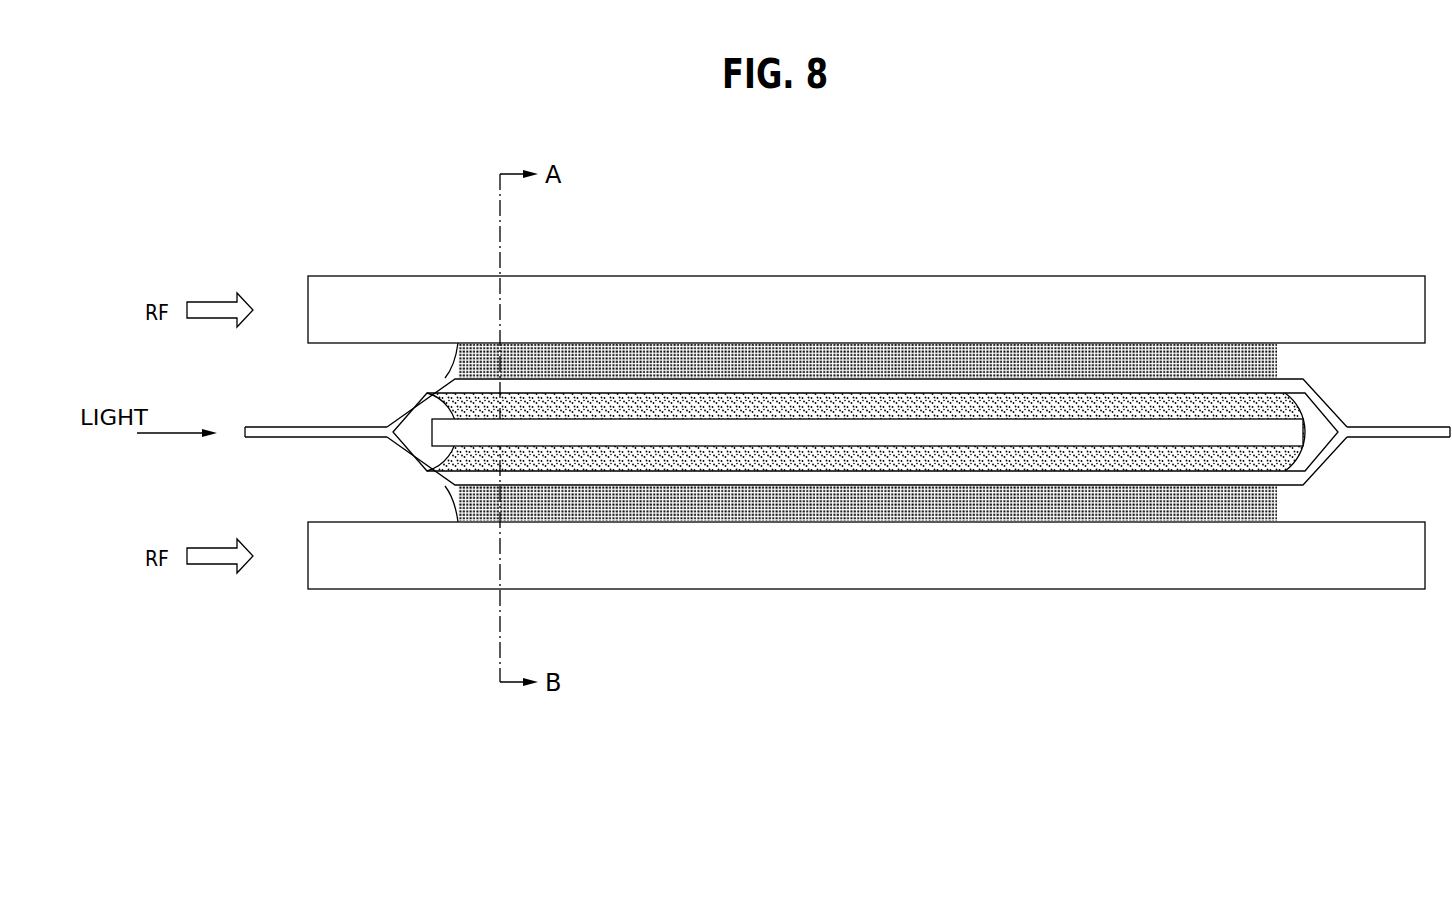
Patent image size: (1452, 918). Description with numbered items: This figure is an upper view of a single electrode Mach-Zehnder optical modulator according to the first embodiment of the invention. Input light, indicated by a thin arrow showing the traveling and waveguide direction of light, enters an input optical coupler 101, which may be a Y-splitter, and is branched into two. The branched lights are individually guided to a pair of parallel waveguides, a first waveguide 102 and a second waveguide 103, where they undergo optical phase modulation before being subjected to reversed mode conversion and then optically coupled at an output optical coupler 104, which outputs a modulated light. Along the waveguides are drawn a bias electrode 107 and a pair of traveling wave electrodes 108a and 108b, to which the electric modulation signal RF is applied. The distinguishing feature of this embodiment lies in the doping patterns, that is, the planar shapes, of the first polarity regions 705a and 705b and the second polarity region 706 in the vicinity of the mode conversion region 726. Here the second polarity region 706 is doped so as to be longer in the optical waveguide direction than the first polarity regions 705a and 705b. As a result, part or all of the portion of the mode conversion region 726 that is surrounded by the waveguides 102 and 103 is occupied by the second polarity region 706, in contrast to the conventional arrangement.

The input optical coupler 101 is at (385, 424).
The first waveguide 102 is at (684, 391).
The second waveguide 103 is at (710, 475).
The output optical coupler 104 is at (1347, 426).
The bias electrode 107 is at (1160, 432).
The traveling wave electrode 108a is at (980, 306).
The traveling wave electrode 108b is at (982, 553).
The first polarity region 705a is at (752, 352).
The first polarity region 705b is at (832, 518).
The second polarity region 706 is at (833, 451).
The mode conversion region 726 is at (455, 362).